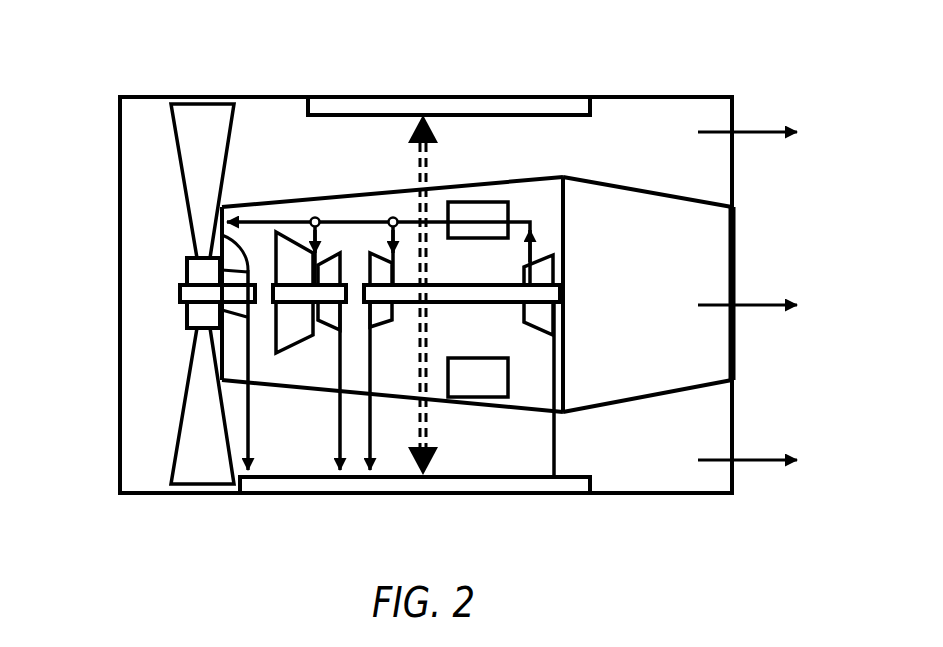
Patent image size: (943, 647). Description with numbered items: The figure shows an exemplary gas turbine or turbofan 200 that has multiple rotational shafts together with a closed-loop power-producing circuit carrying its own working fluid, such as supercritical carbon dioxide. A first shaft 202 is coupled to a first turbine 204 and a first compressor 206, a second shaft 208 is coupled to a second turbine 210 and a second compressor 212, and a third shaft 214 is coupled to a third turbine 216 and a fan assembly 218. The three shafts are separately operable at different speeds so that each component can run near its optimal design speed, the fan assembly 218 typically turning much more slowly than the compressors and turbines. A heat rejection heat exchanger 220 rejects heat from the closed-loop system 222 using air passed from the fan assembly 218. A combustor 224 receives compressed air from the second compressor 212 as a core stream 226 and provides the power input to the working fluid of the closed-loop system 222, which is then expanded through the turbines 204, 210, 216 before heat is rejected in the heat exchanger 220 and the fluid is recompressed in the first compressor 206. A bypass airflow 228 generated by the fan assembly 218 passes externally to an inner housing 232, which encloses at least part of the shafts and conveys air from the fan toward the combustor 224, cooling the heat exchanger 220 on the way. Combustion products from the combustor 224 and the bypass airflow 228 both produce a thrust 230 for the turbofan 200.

The turbofan 200 is at (706, 51).
The first shaft 202 is at (437, 283).
The first turbine 204 is at (392, 332).
The first compressor 206 is at (547, 253).
The second shaft 208 is at (295, 280).
The second turbine 210 is at (330, 327).
The second compressor 212 is at (298, 352).
The third shaft 214 is at (180, 292).
The third turbine 216 is at (229, 260).
The fan assembly 218 is at (166, 215).
The heat rejection heat exchanger 220 is at (543, 496).
The closed-loop system 222 is at (403, 67).
The combustor 224 is at (477, 404).
The core stream 226 is at (271, 341).
The bypass airflow 228 is at (201, 130).
The thrust 230 is at (187, 275).
The inner housing 232 is at (450, 404).